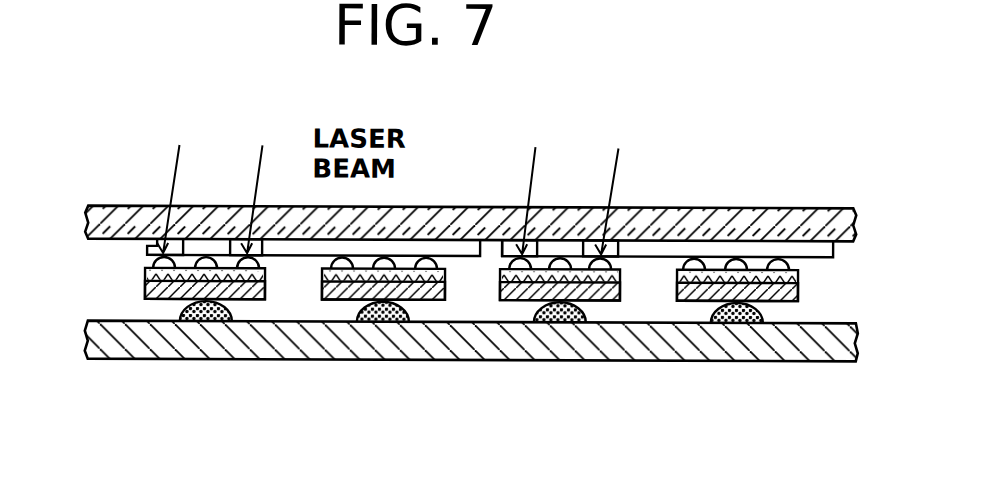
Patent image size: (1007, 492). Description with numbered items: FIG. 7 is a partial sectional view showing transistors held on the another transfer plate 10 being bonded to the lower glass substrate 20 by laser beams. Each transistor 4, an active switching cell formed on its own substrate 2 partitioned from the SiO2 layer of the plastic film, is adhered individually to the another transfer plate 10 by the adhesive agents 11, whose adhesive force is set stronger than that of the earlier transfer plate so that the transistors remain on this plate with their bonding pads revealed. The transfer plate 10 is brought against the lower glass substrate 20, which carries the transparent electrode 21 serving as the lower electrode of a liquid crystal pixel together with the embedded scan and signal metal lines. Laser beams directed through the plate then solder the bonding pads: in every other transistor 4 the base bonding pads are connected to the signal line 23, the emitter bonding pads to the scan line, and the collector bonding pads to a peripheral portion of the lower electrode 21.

The substrate 2 is at (560, 351).
The transistor 4 is at (588, 288).
The another transfer plate 10 is at (208, 340).
The adhesive agents 11 is at (388, 323).
The lower glass substrate 20 is at (468, 207).
The transparent electrode 21 is at (662, 247).
The signal metal line 23 is at (143, 250).